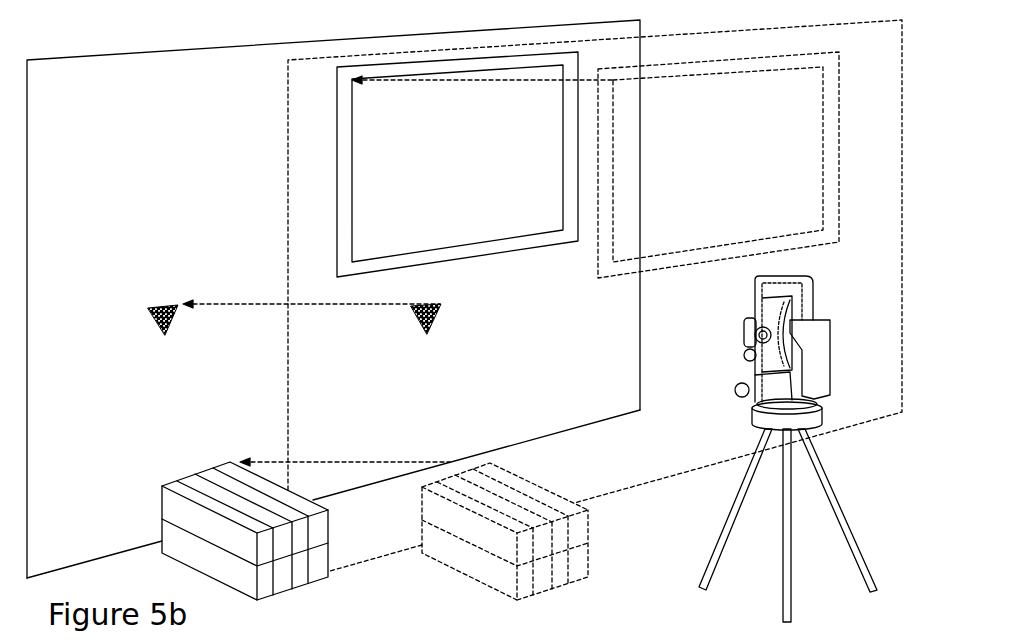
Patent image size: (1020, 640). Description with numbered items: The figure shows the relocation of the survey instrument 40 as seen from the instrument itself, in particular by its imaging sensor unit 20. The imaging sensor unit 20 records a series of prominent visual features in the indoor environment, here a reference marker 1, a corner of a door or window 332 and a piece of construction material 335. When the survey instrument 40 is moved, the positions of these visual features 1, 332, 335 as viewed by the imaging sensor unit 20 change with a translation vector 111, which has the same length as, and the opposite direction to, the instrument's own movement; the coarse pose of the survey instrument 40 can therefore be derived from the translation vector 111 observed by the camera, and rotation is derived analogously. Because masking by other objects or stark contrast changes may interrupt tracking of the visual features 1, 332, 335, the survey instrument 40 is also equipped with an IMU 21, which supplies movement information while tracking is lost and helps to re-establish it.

The reference marker 1 is at (163, 306).
The translation vector 111 is at (517, 80).
The corner of door/window 332 is at (352, 80).
The construction material 335 is at (192, 477).
The imaging sensor unit 20 is at (746, 332).
The IMU 21 is at (803, 512).
The survey instrument 40 is at (803, 447).